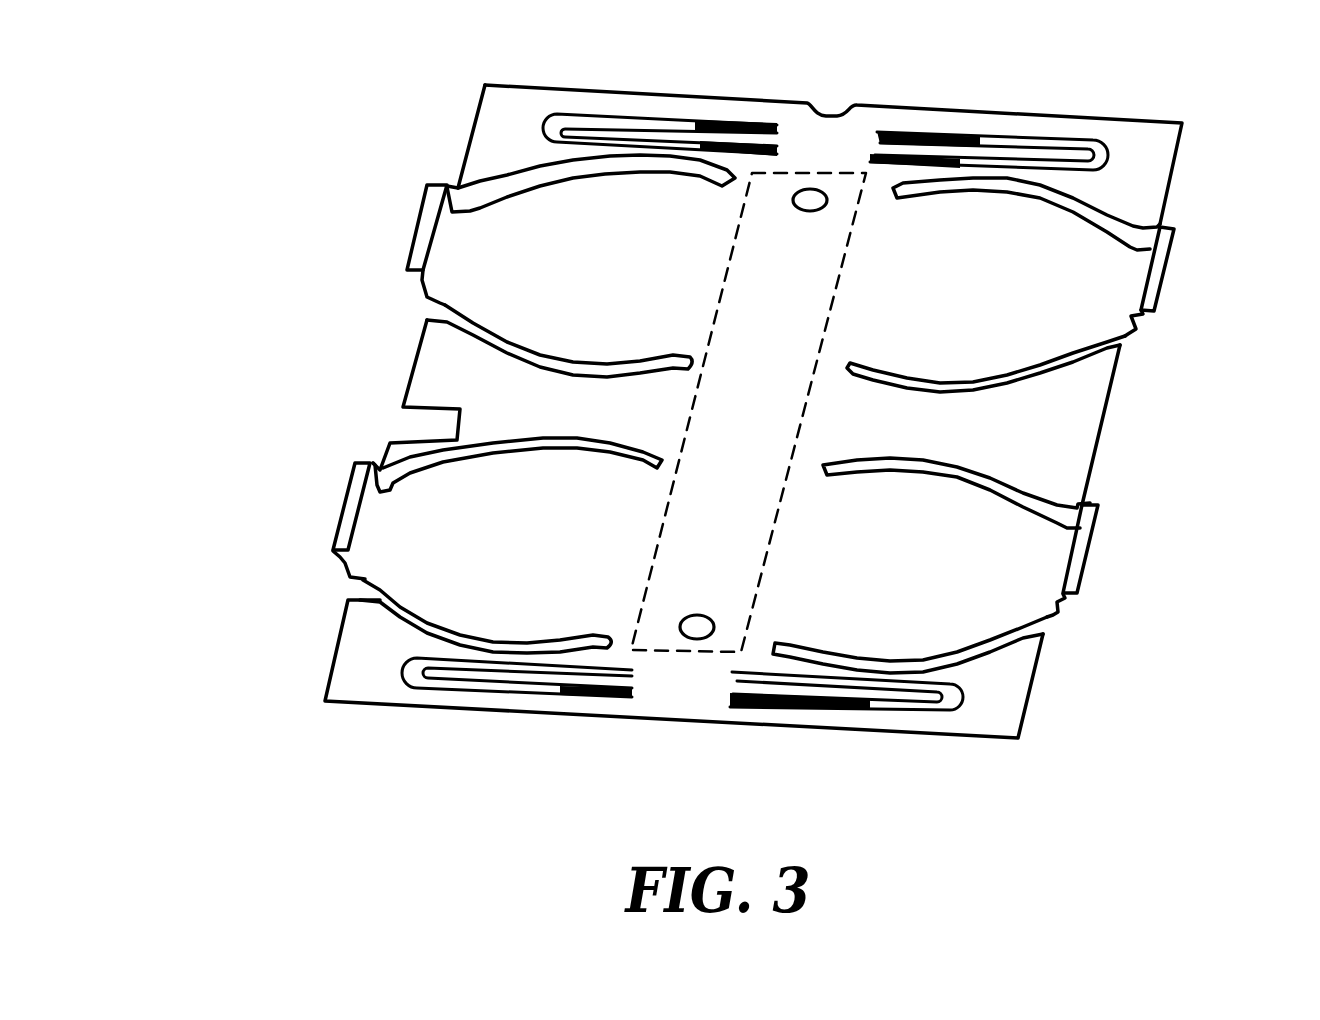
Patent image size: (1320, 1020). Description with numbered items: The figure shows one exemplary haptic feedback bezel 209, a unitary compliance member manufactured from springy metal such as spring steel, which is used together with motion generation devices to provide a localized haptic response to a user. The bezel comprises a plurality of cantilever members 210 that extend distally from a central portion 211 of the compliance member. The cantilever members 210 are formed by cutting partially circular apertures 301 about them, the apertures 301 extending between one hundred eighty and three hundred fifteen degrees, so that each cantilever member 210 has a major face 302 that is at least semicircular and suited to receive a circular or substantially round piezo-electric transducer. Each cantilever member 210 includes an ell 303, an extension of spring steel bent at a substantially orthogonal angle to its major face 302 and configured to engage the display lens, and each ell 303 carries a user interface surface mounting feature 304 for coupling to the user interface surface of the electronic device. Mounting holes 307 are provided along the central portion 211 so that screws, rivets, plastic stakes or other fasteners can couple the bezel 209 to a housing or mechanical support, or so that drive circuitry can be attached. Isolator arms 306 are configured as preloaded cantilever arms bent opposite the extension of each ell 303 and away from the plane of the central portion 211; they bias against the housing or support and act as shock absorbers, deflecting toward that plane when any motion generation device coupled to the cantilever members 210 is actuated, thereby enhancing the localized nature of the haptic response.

The haptic feedback bezel 209 is at (236, 331).
The cantilever members 210 is at (565, 288).
The central portion 211 is at (700, 654).
The partially circular apertures 301 is at (432, 313).
The major face 302 is at (523, 238).
The ell 303 is at (400, 217).
The user interface surface mounting feature 304 is at (421, 241).
The isolator arms 306 is at (668, 140).
The mounting holes 307 is at (812, 195).